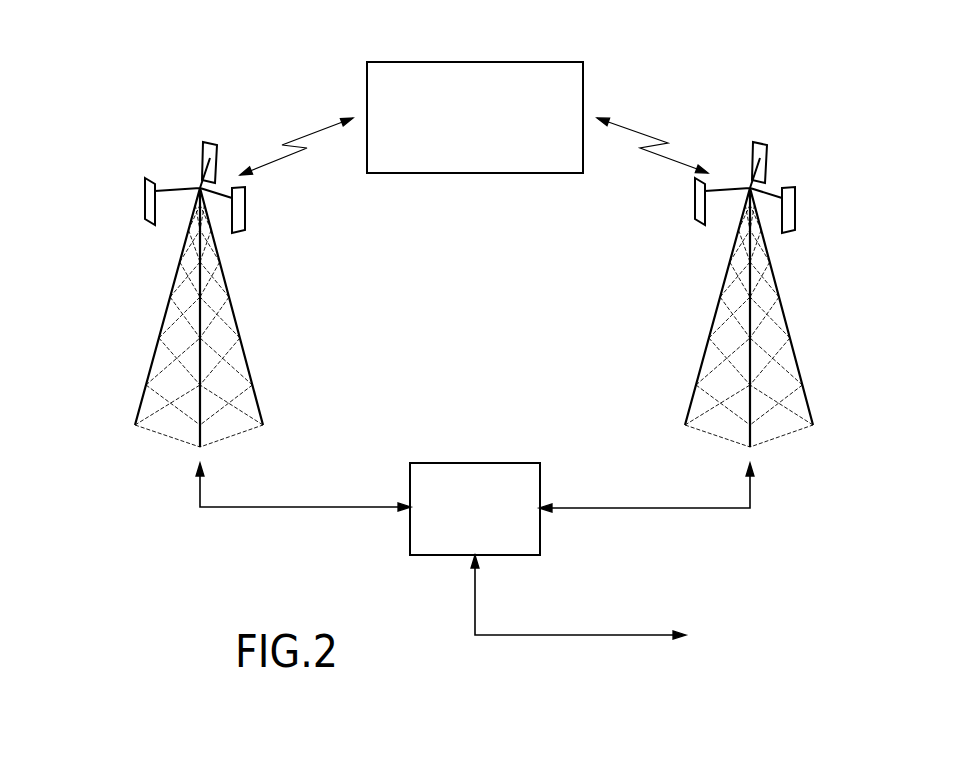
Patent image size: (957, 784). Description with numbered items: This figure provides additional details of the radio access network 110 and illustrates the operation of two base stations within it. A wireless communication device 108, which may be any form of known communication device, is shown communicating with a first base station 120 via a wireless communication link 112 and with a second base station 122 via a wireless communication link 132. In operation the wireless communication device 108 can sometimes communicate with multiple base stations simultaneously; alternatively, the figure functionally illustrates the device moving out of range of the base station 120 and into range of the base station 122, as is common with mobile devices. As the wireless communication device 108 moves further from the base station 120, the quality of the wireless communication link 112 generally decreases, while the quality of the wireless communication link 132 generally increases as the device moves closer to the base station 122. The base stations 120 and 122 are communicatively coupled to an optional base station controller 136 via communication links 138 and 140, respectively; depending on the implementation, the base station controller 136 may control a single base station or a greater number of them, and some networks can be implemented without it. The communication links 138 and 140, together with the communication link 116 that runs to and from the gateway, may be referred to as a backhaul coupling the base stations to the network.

The wireless communication device 108 is at (493, 173).
The radio access network 110 is at (127, 540).
The wireless communication link 112 is at (303, 132).
The communication link 116 is at (530, 635).
The base station 120 is at (245, 343).
The base station 122 is at (795, 343).
The wireless communication link 132 is at (640, 132).
The base station controller 136 is at (450, 463).
The communication link 138 is at (287, 507).
The communication link 140 is at (628, 508).